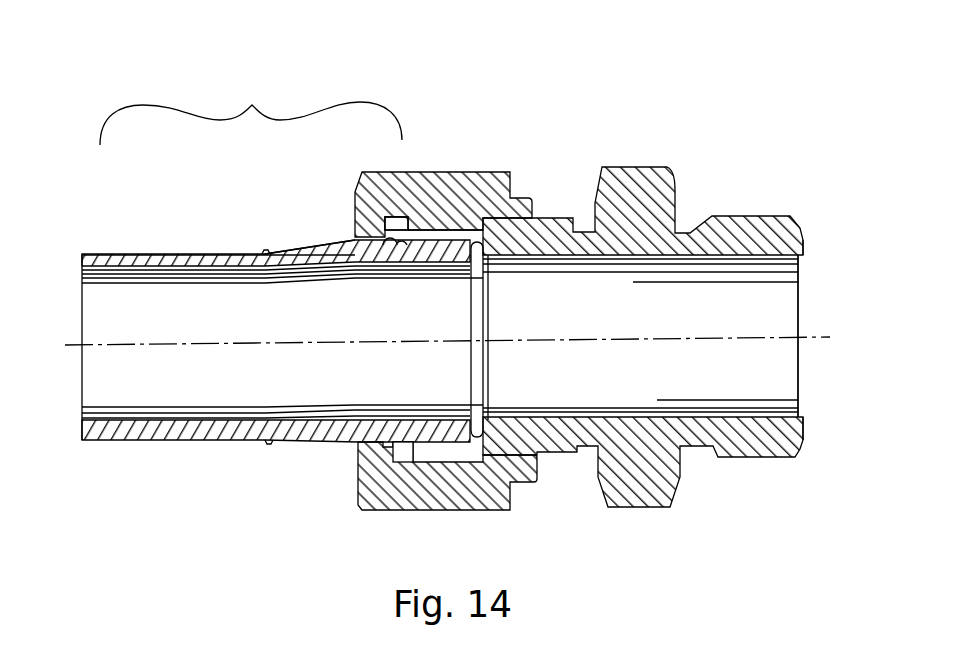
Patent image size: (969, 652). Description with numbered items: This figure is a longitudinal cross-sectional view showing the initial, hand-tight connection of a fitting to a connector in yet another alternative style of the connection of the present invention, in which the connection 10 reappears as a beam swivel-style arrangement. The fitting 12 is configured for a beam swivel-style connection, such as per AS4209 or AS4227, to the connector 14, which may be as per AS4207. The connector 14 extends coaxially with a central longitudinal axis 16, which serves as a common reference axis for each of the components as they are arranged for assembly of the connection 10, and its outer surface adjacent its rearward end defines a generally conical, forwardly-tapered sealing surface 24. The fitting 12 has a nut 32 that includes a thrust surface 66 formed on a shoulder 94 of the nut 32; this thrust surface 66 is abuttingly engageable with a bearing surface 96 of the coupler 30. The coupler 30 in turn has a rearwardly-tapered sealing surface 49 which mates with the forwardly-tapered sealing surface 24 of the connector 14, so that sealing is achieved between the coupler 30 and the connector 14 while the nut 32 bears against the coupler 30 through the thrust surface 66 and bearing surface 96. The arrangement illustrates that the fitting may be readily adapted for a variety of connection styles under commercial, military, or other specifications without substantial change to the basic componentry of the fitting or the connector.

The connection 10 is at (760, 90).
The fitting 12 is at (252, 105).
The connector 14 is at (745, 216).
The central longitudinal axis 16 is at (805, 337).
The tapered sealing surface 24 is at (473, 244).
The coupler 30 is at (77, 328).
The nut 32 is at (521, 196).
The rearwardly-tapered sealing surface 49 is at (512, 248).
The thrust surface 66 is at (396, 231).
The shoulder 94 is at (372, 240).
The coupler bearing surface 96 is at (442, 250).